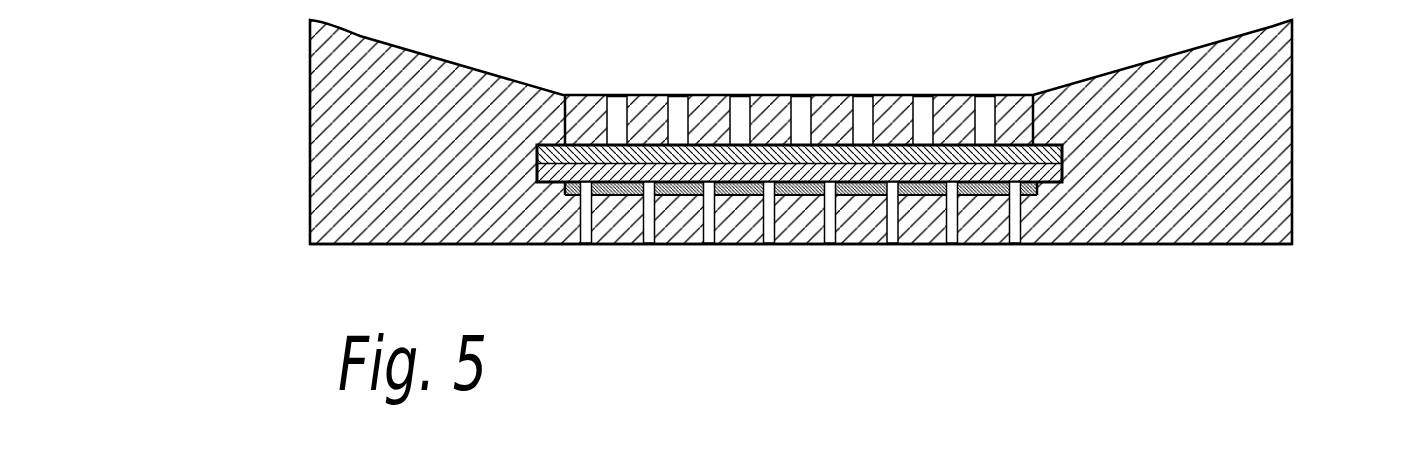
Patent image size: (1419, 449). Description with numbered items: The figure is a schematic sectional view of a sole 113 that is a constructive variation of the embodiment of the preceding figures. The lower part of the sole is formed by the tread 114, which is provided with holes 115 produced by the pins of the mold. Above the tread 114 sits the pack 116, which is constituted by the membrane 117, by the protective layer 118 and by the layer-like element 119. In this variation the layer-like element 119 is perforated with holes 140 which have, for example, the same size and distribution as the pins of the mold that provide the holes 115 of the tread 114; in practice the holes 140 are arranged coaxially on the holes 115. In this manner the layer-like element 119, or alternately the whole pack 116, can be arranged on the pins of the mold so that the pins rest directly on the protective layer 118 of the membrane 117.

The sole 113 is at (310, 100).
The tread 114 is at (1162, 244).
The holes of the tread 115 is at (705, 232).
The pack 116 is at (786, 223).
The membrane 117 is at (1008, 147).
The protective layer 118 is at (917, 175).
The layer-like element 119 is at (855, 187).
The holes 140 is at (645, 187).